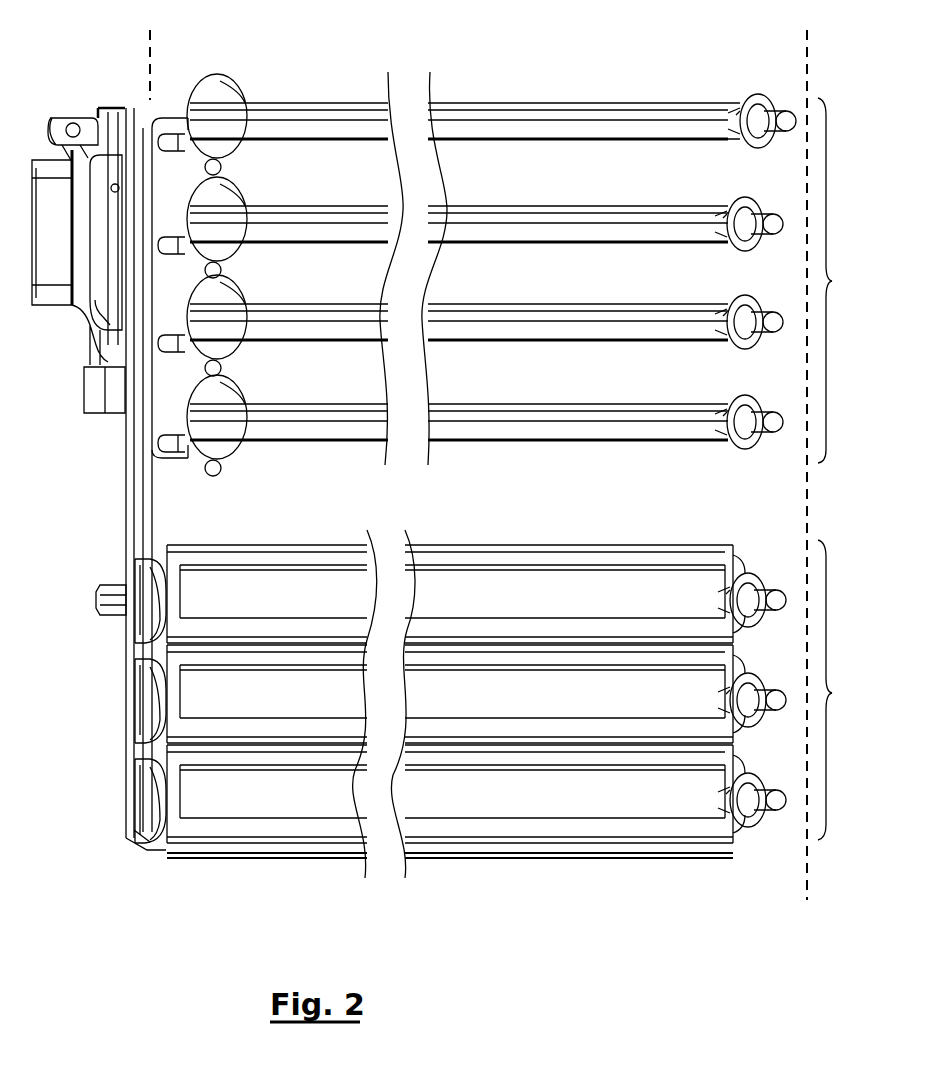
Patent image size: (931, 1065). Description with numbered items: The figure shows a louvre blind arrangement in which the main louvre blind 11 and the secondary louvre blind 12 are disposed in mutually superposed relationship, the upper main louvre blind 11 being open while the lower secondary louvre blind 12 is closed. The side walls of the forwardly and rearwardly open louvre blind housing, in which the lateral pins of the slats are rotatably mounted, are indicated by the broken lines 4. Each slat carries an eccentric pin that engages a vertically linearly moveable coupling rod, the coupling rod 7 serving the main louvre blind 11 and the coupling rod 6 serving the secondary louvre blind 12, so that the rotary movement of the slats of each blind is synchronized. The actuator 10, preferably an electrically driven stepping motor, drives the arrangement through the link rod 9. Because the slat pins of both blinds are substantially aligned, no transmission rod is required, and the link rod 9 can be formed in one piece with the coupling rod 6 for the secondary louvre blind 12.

The broken lines 4 is at (162, 63).
The coupling rod 6 is at (128, 720).
The coupling rod 7 is at (165, 425).
The link rod 9 is at (136, 508).
The actuator 10 is at (98, 108).
The main louvre blind 11 is at (626, 268).
The secondary louvre blind 12 is at (503, 704).